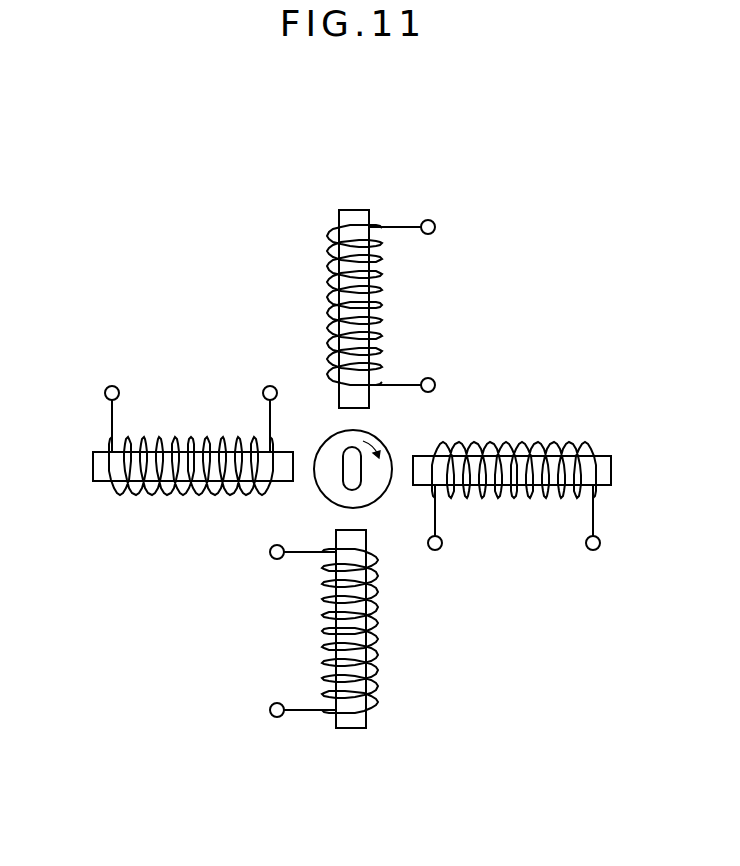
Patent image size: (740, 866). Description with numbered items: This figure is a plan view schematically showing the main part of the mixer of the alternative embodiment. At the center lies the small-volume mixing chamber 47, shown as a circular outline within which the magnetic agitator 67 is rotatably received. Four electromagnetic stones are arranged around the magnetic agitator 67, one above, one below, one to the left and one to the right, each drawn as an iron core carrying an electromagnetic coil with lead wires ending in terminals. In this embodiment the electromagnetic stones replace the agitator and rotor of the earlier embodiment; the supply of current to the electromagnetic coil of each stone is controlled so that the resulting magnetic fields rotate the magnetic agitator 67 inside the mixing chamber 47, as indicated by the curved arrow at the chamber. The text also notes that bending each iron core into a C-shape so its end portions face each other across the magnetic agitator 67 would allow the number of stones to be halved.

The mixing chamber 47 is at (357, 436).
The magnetic agitator 67 is at (355, 477).